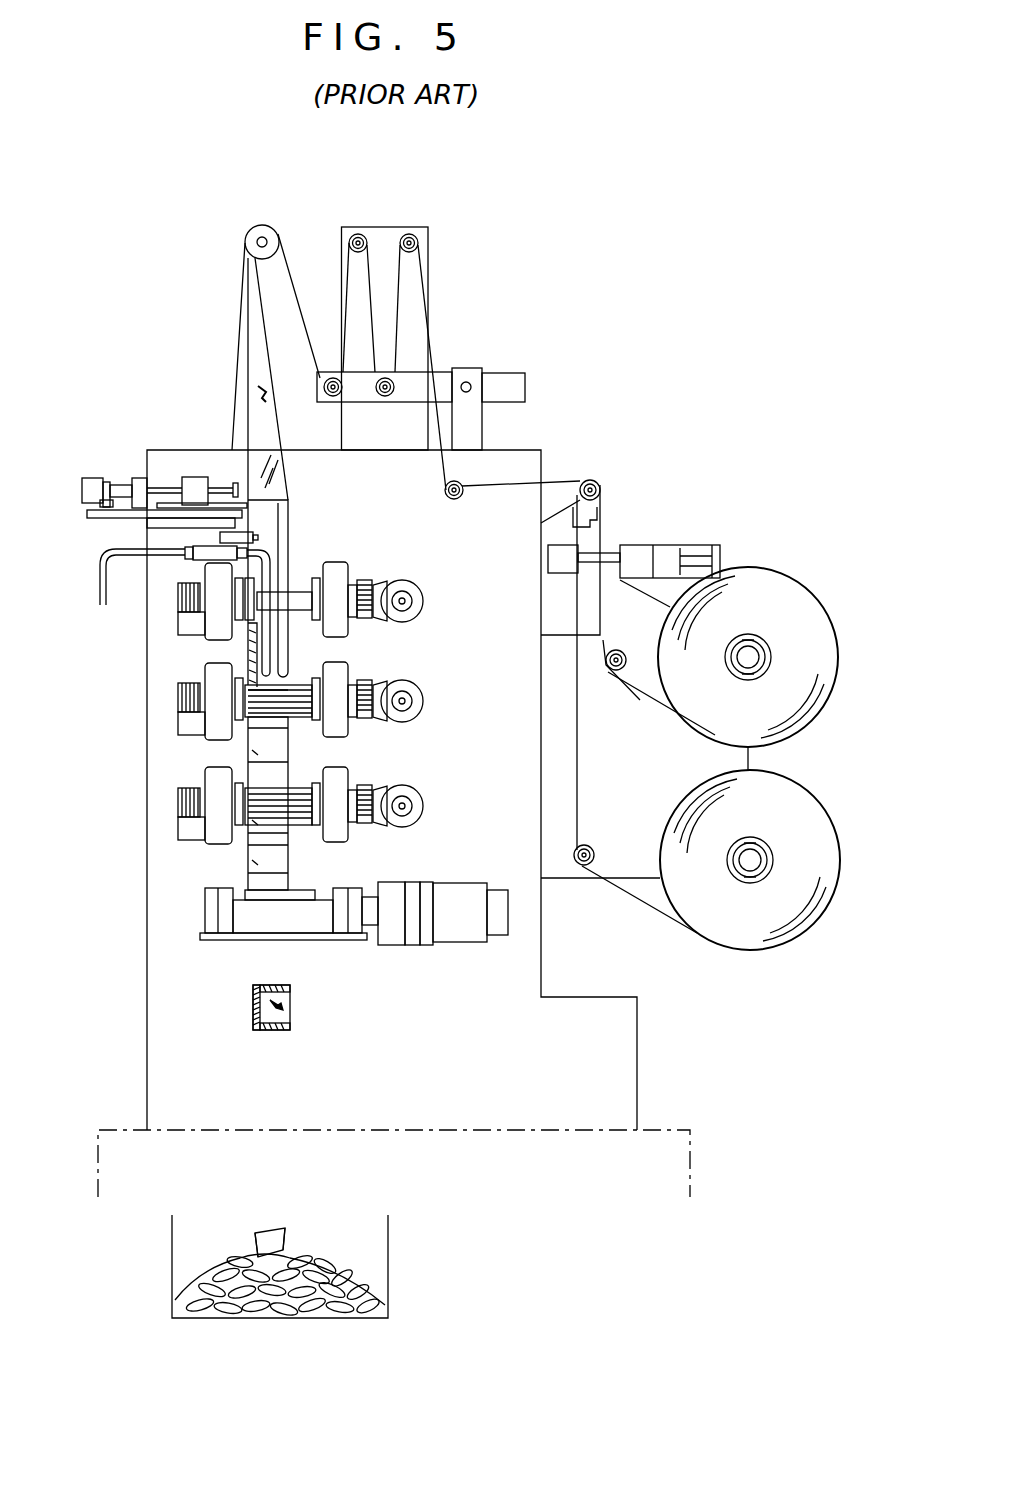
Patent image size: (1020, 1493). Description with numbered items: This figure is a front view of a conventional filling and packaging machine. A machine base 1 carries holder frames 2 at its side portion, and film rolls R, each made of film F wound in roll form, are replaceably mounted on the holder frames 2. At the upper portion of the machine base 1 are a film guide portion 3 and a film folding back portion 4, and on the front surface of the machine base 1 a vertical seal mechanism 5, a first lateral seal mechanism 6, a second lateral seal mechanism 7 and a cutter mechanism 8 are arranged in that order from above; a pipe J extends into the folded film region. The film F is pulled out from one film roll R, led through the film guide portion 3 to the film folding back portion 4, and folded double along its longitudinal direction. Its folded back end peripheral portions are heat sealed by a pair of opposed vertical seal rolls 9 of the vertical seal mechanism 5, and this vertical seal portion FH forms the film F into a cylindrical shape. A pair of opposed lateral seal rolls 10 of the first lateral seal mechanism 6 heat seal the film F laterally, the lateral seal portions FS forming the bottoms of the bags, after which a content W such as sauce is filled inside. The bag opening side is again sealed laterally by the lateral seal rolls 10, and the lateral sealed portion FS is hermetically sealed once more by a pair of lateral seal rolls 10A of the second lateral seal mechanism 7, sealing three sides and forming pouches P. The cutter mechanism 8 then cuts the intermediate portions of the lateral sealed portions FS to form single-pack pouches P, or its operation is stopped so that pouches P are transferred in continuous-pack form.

The machine base 1 is at (660, 1074).
The holder frames 2 is at (768, 643).
The film guide portion 3 is at (440, 288).
The film folding back portion 4 is at (190, 460).
The vertical seal mechanism 5 is at (213, 613).
The first lateral seal mechanism 6 is at (213, 718).
The second lateral seal mechanism 7 is at (213, 820).
The cutter mechanism 8 is at (245, 903).
The vertical seal rolls 9 is at (258, 582).
The lateral seal rolls 10 is at (305, 713).
The lateral seal rolls 10A is at (285, 800).
The film F is at (258, 390).
The filling pipe J is at (102, 560).
The film roll R is at (813, 675).
The pouches P is at (245, 1038).
The vertical seal portion FH is at (257, 1003).
The lateral seal portions FS is at (277, 1028).
The content W is at (283, 1008).